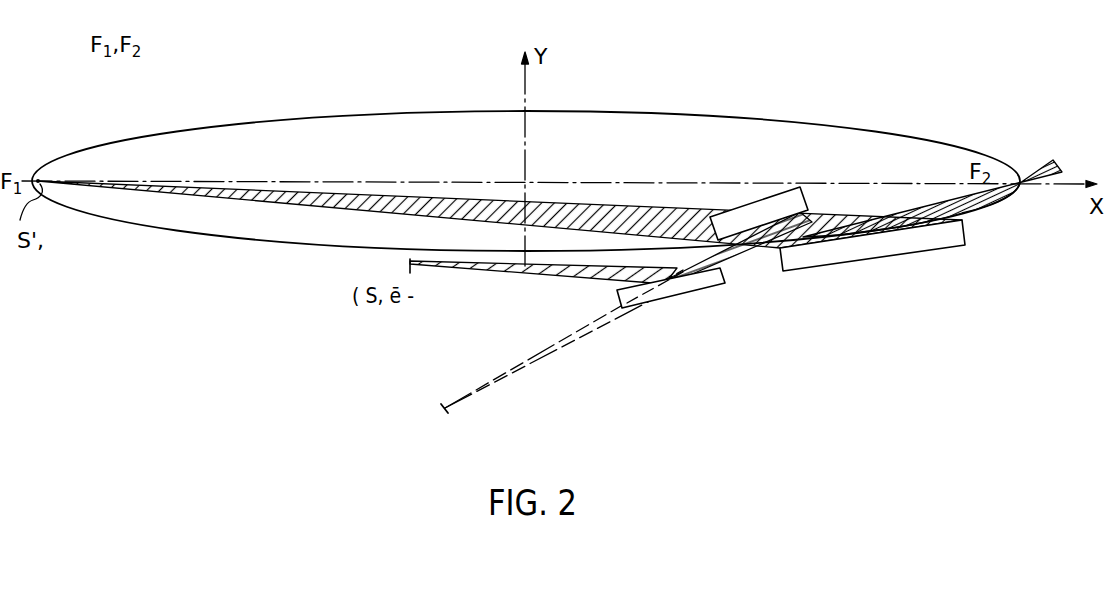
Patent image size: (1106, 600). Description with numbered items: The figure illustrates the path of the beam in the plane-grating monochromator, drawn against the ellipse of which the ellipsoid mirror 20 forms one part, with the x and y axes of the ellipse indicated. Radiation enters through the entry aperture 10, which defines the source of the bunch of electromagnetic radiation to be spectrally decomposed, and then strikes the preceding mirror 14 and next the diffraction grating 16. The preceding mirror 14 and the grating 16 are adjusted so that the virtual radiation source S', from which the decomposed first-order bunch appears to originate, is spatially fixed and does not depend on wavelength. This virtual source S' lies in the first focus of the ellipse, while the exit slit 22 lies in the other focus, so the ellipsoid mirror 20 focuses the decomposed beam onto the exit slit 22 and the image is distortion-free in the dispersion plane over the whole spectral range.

The entry aperture 10 is at (408, 272).
The preceding mirror 14 is at (682, 288).
The diffraction grating 16 is at (783, 203).
The ellipsoid mirror 20 is at (892, 243).
The exit slit 22 is at (1012, 192).